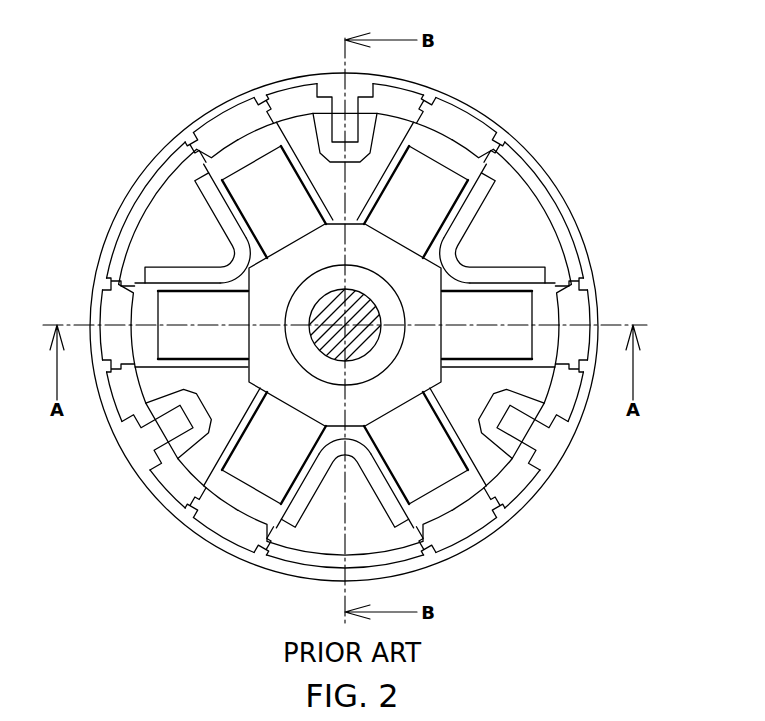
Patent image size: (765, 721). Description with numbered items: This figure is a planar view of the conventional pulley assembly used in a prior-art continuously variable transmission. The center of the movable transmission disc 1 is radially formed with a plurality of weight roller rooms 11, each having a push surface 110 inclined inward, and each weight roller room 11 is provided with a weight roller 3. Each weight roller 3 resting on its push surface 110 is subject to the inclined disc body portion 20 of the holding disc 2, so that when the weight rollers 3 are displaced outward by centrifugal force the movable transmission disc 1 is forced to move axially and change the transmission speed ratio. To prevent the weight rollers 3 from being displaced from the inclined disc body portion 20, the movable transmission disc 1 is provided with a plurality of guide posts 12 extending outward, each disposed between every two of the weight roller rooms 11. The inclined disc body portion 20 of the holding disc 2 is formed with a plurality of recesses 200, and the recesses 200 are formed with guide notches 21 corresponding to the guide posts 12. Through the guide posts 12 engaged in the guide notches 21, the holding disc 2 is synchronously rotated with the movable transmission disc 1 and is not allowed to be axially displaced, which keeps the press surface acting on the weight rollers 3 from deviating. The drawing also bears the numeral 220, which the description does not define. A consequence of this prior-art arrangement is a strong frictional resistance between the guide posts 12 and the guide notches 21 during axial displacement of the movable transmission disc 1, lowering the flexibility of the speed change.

The movable transmission disc 1 is at (156, 490).
The holding disc 2 is at (265, 530).
The weight roller 3 is at (455, 400).
The weight roller room 11 is at (566, 294).
The push surface 110 is at (586, 313).
The guide post 12 is at (374, 111).
The inclined disc body portion 20 is at (440, 148).
The recess 200 is at (328, 185).
The guide notch 21 is at (353, 133).
The connecting portion of yoke 220 is at (452, 520).